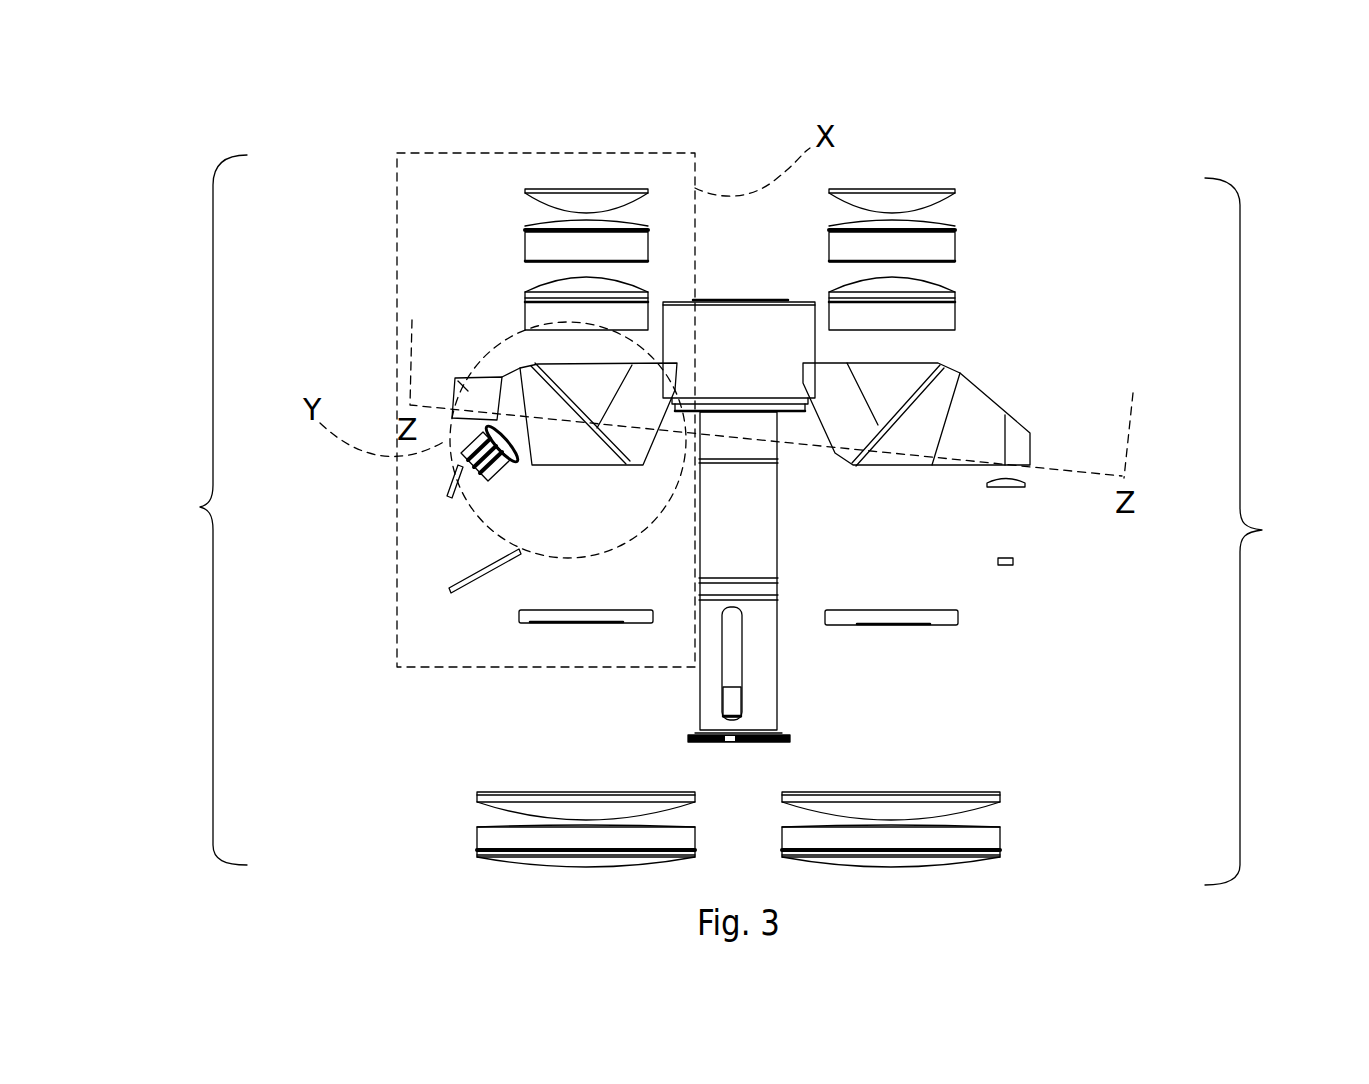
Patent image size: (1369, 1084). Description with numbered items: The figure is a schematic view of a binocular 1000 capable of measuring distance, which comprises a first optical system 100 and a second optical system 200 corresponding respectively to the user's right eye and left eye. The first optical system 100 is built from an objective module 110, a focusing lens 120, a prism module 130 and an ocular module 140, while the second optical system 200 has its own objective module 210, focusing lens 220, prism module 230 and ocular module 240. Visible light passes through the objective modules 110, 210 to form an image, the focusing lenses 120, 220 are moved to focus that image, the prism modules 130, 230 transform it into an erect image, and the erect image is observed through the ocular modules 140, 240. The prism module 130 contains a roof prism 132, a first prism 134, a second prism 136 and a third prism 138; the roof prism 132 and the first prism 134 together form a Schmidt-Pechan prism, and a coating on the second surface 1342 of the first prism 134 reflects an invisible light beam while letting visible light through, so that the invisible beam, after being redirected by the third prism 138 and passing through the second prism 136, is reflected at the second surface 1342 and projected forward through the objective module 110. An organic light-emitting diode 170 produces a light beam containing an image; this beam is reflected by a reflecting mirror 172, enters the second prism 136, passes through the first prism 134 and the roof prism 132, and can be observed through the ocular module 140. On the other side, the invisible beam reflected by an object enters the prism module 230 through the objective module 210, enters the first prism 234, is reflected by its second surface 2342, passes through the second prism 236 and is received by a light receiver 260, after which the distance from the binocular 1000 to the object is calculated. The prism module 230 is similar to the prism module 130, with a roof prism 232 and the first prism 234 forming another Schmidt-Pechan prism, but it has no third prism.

The binocular 1000 is at (137, 93).
The first optical system 100 is at (182, 510).
The second optical system 200 is at (1272, 531).
The objective module 110 is at (477, 836).
The focusing lens 120 is at (530, 624).
The prism module 130 is at (508, 358).
The roof prism 132 is at (645, 465).
The first prism 134 is at (588, 465).
The second surface 1342 is at (530, 364).
The second prism 136 is at (528, 472).
The third prism 138 is at (484, 370).
The ocular module 140 is at (502, 235).
The organic light-emitting diode 170 is at (450, 590).
The reflecting mirror 172 is at (450, 477).
The objective module 210 is at (1000, 828).
The focusing lens 220 is at (952, 625).
The prism module 230 is at (1003, 395).
The roof prism 232 is at (842, 465).
The first prism 234 is at (900, 465).
The second prism 236 is at (958, 465).
The second surface 2342 is at (942, 364).
The ocular module 240 is at (973, 235).
The light receiver 260 is at (1007, 567).